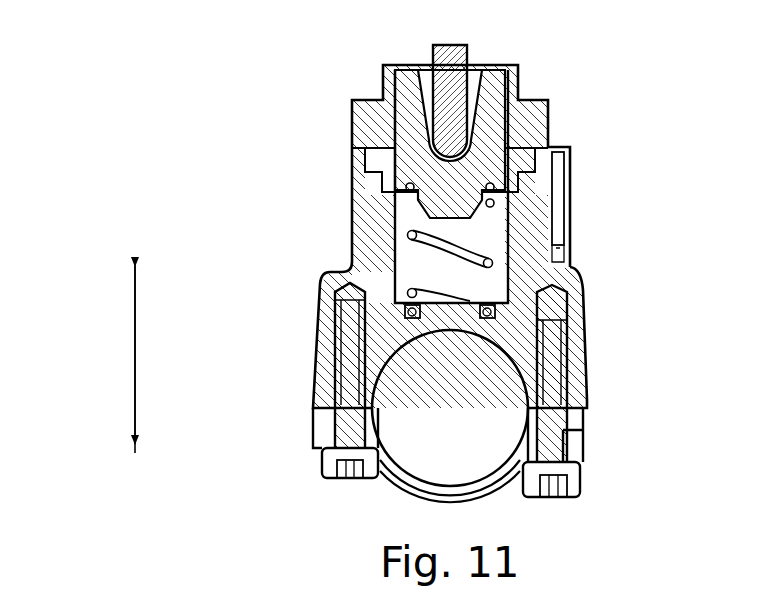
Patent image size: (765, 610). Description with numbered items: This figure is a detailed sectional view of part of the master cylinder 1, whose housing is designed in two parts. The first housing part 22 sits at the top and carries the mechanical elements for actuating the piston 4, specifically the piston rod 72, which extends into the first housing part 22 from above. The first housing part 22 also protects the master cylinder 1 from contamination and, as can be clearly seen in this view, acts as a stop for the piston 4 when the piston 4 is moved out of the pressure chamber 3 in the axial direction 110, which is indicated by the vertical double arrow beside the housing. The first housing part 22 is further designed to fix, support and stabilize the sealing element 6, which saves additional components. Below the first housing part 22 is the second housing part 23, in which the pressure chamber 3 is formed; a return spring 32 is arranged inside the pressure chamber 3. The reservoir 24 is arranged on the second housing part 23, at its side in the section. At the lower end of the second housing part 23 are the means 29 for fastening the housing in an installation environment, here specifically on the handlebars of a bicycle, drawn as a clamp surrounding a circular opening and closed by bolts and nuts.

The master cylinder 1 is at (210, 249).
The pressure chamber 3 is at (485, 287).
The piston 4 is at (500, 105).
The sealing element 6 is at (378, 170).
The first housing part 22 is at (360, 127).
The second housing part 23 is at (352, 240).
The reservoir 24 is at (558, 187).
The means for fastening 29 is at (303, 440).
The return spring 32 is at (458, 250).
The piston rod 72 is at (467, 55).
The axial direction 110 is at (132, 370).